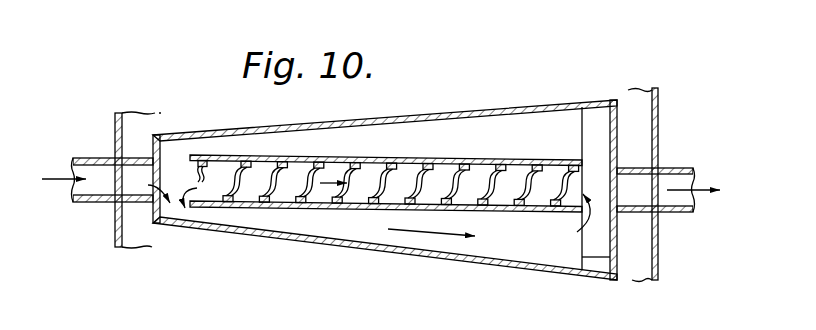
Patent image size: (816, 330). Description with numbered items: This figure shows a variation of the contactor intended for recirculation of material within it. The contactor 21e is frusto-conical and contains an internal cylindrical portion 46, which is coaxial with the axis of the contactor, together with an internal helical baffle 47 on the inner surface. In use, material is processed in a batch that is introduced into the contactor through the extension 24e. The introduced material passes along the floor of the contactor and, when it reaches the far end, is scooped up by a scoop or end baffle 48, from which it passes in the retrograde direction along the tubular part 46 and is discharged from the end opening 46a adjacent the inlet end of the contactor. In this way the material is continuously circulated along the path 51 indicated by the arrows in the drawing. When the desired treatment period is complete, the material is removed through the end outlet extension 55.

The contactor 21e is at (434, 112).
The extension 24e is at (85, 202).
The internal cylindrical portion 46 is at (452, 176).
The end opening 46a is at (190, 177).
The internal helical baffle 47 is at (250, 208).
The scoop or end baffle 48 is at (598, 243).
The path 51 is at (358, 185).
The end outlet extension 55 is at (672, 168).